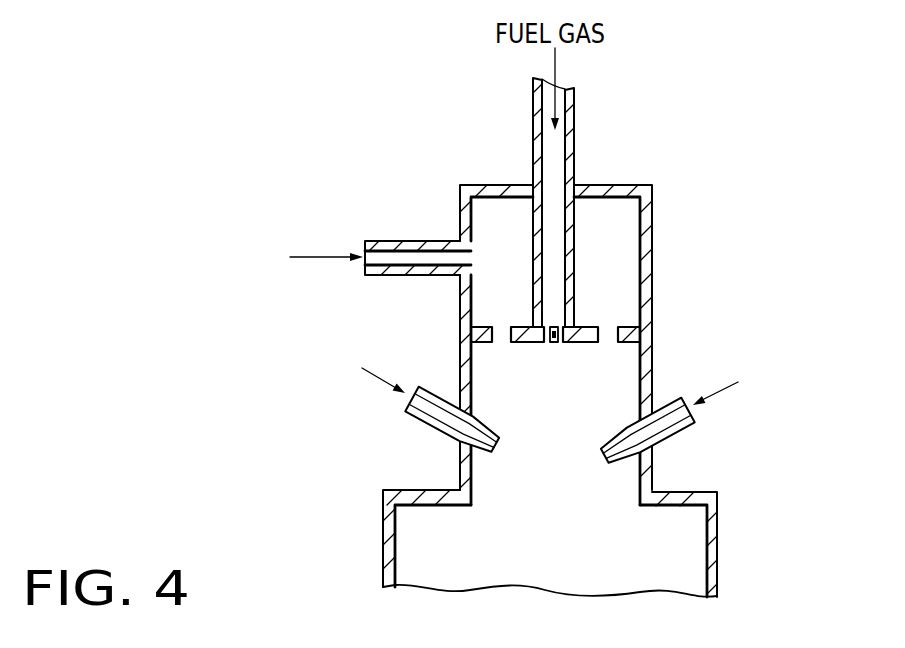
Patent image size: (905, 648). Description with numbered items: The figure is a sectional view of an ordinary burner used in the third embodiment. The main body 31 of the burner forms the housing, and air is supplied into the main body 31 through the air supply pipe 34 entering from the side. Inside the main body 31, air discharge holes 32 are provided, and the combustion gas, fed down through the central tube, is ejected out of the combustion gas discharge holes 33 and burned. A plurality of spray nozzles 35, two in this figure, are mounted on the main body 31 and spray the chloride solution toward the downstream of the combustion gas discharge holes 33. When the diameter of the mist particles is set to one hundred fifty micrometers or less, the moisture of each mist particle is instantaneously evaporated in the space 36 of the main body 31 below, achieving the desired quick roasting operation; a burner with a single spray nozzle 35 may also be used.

The main body of the burner 31 is at (652, 282).
The air discharge holes 32 is at (500, 344).
The combustion gas discharge holes 33 is at (560, 345).
The air supply pipe 34 is at (420, 240).
The spray nozzles 35 is at (432, 428).
The space 36 is at (432, 550).